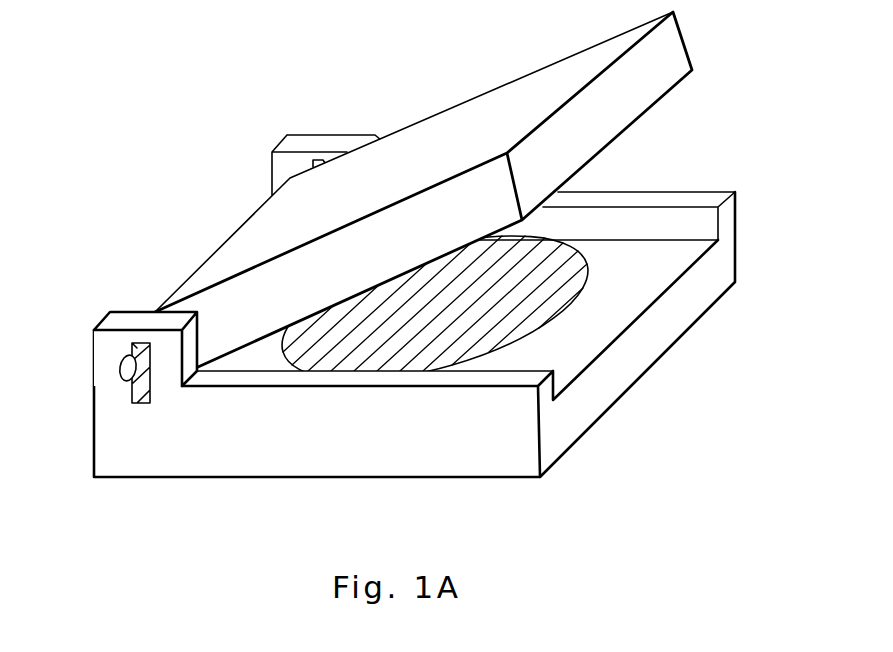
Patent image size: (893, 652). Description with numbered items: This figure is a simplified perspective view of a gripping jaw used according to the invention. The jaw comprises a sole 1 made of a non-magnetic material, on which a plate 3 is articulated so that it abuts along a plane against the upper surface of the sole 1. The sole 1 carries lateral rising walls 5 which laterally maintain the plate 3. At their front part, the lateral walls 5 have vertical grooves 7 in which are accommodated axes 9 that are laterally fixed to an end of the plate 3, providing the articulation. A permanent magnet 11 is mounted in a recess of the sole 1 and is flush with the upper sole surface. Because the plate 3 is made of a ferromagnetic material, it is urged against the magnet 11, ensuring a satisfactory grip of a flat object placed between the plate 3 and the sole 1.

The sole 1 is at (647, 338).
The plate 3 is at (667, 52).
The lateral rising walls 5 is at (108, 362).
The vertical grooves 7 is at (146, 402).
The axes 9 is at (127, 357).
The permanent magnet 11 is at (540, 257).